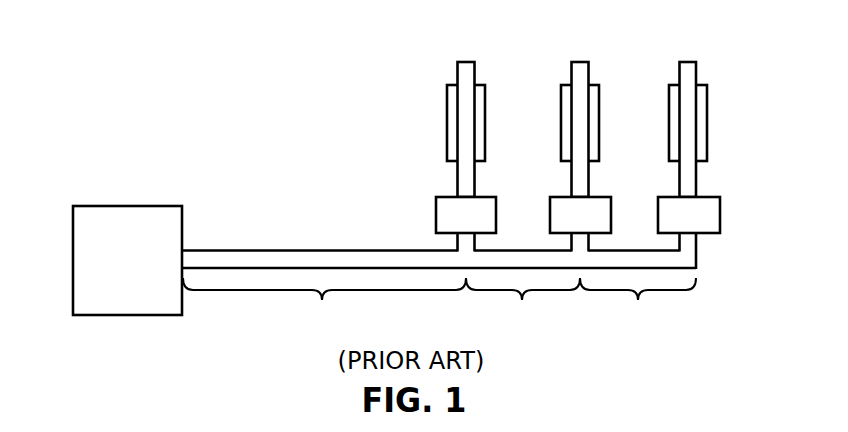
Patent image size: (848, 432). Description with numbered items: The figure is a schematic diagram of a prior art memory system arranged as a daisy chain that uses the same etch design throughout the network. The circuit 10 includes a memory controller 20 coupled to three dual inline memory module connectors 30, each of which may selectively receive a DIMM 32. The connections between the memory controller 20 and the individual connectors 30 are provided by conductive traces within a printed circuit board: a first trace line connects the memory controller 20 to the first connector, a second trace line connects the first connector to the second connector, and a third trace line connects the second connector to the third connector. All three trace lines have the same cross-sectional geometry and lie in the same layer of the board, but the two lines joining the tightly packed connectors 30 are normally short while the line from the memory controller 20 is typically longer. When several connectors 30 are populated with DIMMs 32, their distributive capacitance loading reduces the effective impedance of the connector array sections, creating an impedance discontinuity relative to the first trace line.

The circuit 10 is at (320, 85).
The memory controller 20 is at (127, 206).
The dual inline memory module (DIMM) connector 30 is at (488, 203).
The DIMM 32 is at (468, 110).